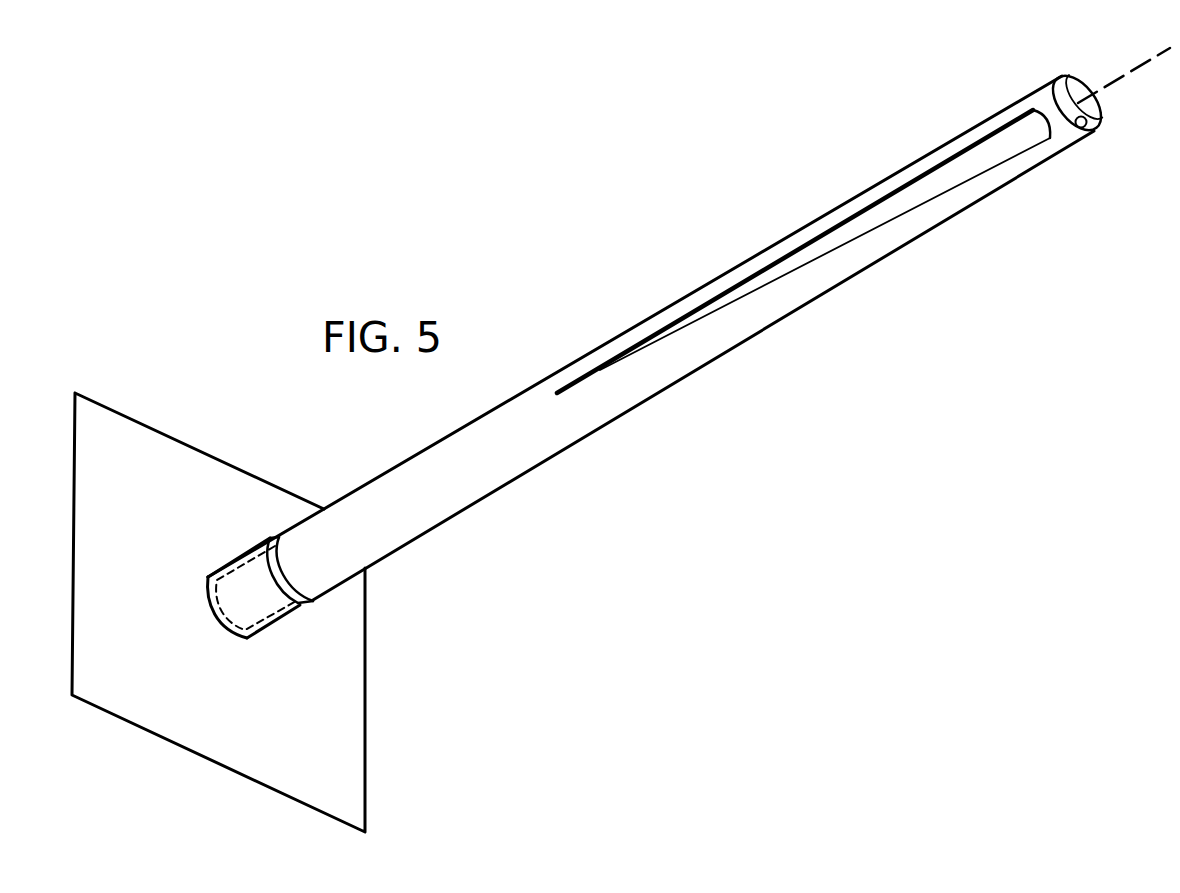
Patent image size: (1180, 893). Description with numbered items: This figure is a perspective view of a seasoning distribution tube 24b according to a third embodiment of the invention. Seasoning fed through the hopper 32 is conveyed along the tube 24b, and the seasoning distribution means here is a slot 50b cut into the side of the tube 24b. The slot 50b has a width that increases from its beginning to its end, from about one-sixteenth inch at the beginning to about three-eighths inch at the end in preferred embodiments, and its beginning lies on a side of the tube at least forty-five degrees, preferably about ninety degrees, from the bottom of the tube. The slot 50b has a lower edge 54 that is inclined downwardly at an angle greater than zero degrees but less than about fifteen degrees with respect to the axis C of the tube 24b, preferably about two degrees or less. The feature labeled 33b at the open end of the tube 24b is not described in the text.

The hopper 32 is at (355, 684).
The tube 24b is at (873, 253).
The slot 50b is at (605, 368).
The lower edge 54 is at (748, 292).
The slot opening at tube end 33b is at (1079, 129).
The axis C is at (1166, 49).